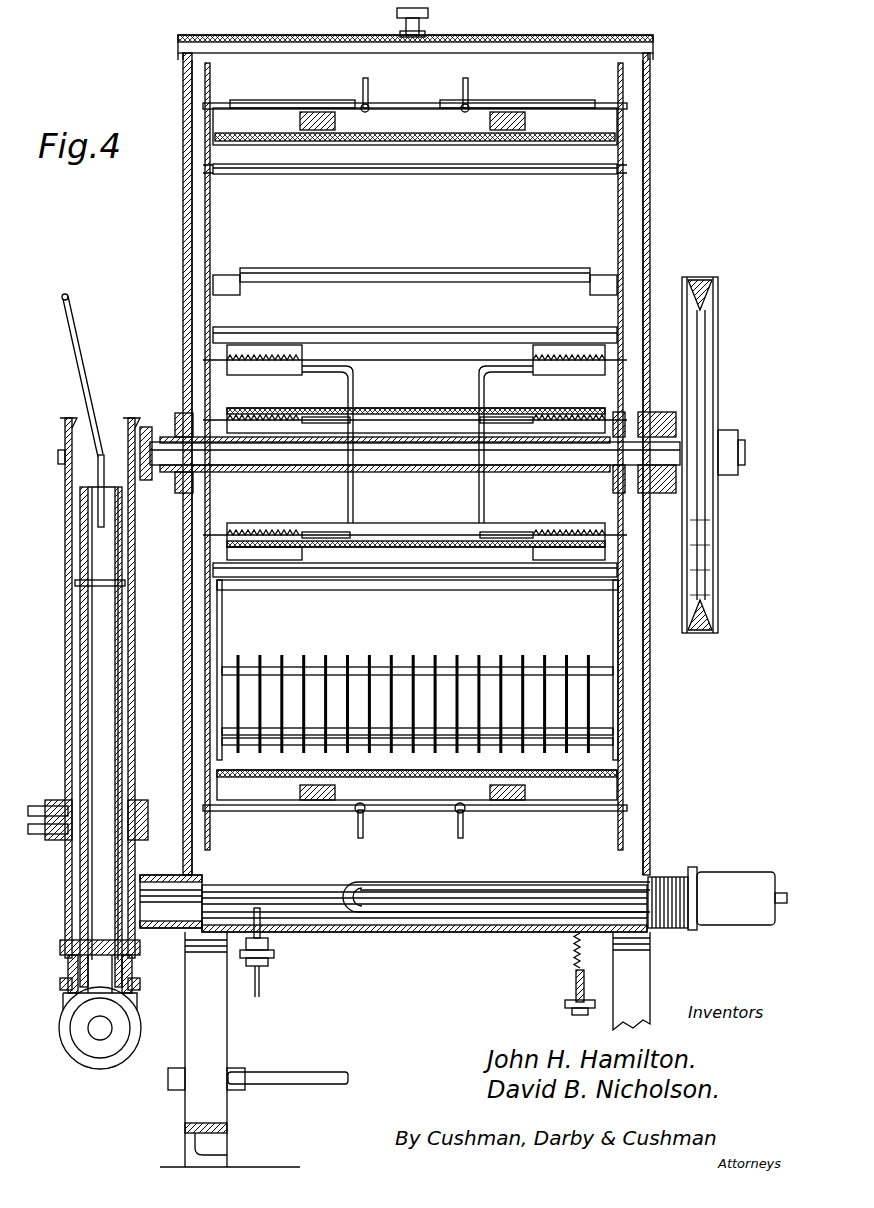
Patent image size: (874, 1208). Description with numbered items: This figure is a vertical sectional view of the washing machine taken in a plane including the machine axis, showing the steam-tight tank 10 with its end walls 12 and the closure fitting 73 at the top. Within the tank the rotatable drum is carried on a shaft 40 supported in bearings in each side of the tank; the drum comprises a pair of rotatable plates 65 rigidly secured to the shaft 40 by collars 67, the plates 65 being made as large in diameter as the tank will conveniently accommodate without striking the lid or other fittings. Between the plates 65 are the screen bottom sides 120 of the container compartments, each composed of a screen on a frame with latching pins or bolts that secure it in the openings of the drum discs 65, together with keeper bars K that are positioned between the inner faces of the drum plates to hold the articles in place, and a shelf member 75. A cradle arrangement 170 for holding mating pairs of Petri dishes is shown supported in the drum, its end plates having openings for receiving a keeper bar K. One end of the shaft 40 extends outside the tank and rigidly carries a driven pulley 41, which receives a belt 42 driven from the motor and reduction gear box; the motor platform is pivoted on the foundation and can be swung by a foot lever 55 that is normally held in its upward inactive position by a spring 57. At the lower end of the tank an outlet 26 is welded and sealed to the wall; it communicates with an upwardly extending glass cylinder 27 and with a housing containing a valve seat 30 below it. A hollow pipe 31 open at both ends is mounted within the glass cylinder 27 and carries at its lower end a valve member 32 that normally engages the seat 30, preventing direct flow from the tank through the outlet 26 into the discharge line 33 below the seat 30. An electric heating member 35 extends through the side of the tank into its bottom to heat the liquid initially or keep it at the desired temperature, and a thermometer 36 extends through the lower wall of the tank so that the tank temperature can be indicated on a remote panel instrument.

The cover 73 is at (563, 38).
The tank 10 is at (648, 132).
The ends 12 is at (183, 232).
The rotatable plates 65 is at (210, 250).
The shelf 75 is at (396, 122).
The keeper bar K is at (475, 172).
The collars 67 is at (265, 476).
The inner or bottom sides of the compartments 120 is at (388, 408).
The shaft 40 is at (398, 452).
The belt 42 is at (700, 283).
The driven pulley 41 is at (705, 348).
The cradle arrangement 170 is at (455, 685).
The glass cylinder 27 is at (65, 650).
The hollow pipe 31 is at (83, 732).
The valve seat 30 is at (140, 962).
The valve member 32 is at (67, 962).
The discharge line 33 is at (78, 1058).
The outlet 26 is at (178, 870).
The electric heating member 35 is at (462, 905).
The thermometer 36 is at (285, 882).
The spring 57 is at (575, 950).
The foot lever 55 is at (565, 1004).